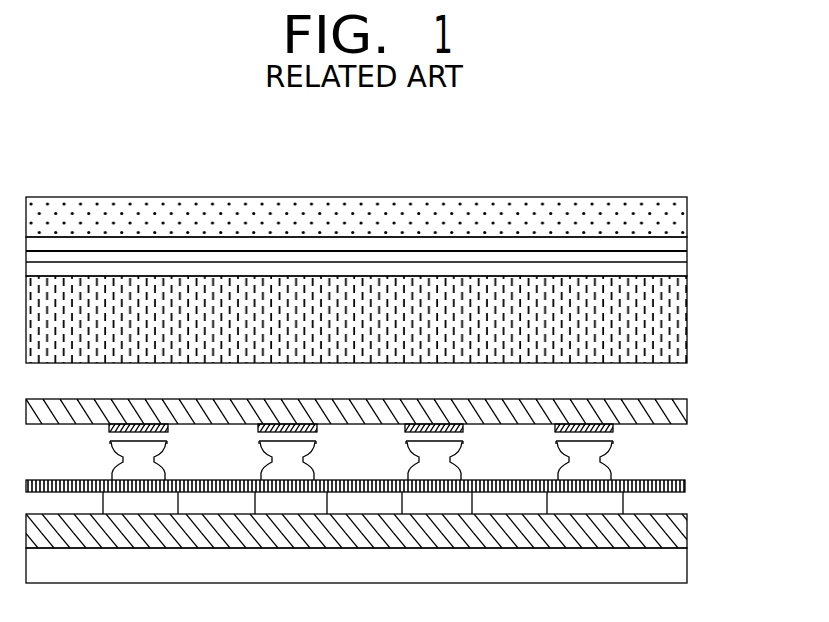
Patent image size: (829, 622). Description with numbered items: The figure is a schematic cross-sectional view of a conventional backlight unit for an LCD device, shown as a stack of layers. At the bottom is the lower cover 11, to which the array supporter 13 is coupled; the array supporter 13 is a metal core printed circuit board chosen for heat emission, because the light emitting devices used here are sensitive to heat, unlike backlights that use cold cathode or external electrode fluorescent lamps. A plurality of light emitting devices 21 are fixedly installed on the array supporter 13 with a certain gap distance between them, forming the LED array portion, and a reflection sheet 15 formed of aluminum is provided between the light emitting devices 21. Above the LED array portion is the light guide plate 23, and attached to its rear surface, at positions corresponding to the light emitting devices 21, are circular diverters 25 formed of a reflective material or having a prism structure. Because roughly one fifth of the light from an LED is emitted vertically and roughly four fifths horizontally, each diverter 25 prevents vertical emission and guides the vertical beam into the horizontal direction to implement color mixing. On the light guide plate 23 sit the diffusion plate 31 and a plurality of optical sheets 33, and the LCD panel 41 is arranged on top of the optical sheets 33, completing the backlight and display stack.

The lower cover 11 is at (668, 568).
The array supporter 13 is at (670, 530).
The reflection sheet 15 is at (686, 486).
The light emitting devices 21 is at (590, 462).
The light guide plate 23 is at (668, 412).
The diverter 25 is at (590, 423).
The diffusion plate 31 is at (670, 319).
The optical sheets 33 is at (695, 237).
The LCD panel 41 is at (668, 221).